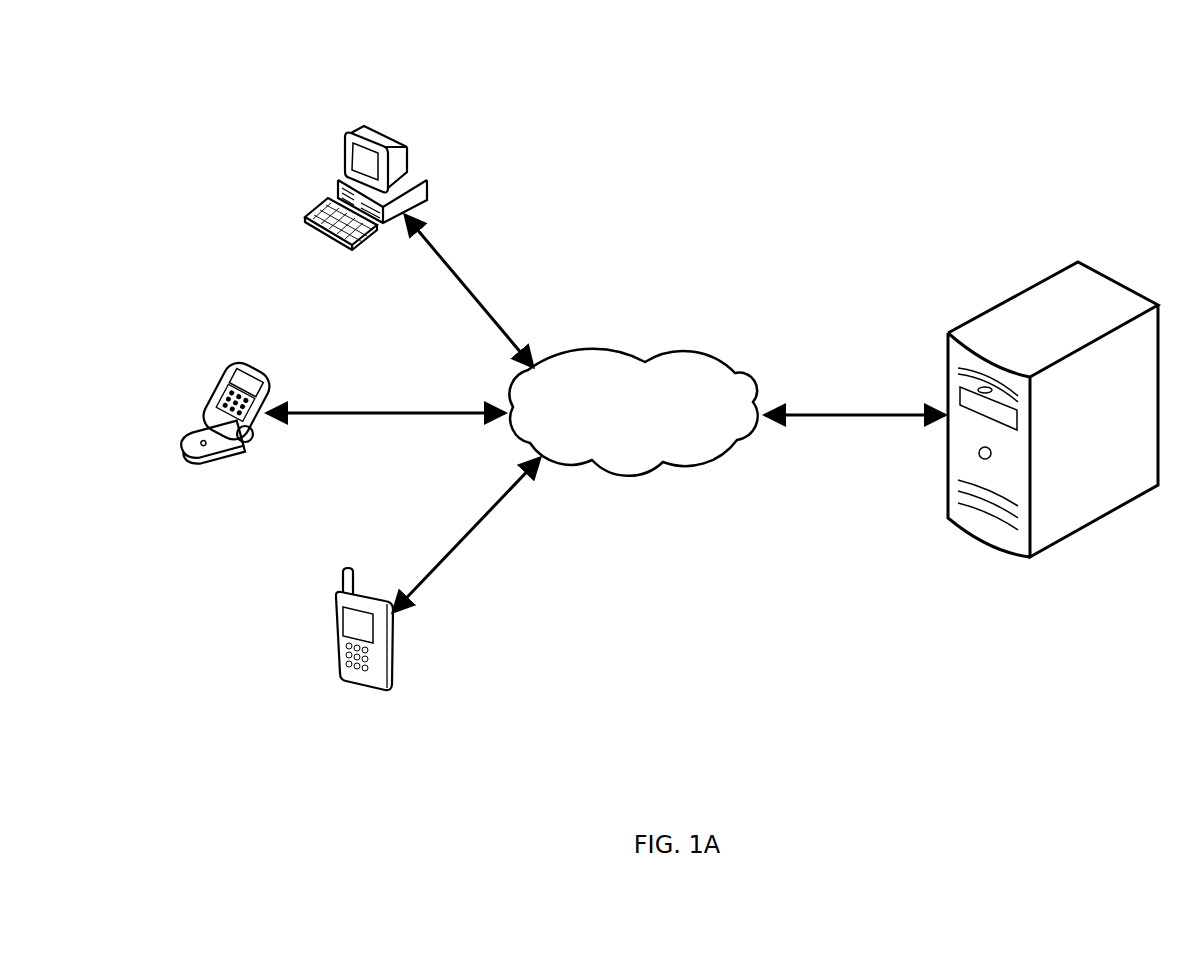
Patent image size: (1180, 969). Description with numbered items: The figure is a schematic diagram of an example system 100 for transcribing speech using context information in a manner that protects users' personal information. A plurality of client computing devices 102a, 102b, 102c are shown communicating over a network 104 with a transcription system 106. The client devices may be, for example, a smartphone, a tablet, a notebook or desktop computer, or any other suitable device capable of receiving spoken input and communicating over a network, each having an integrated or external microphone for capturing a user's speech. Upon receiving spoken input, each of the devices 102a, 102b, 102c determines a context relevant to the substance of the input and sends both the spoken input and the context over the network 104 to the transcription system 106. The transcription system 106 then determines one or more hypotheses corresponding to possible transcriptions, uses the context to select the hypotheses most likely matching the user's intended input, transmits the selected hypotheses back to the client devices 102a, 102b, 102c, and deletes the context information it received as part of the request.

The system 100 is at (240, 88).
The client computing device 102a is at (416, 152).
The client computing device 102b is at (267, 370).
The client computing device 102c is at (395, 647).
The network 104 is at (633, 412).
The transcription system 106 is at (1053, 409).